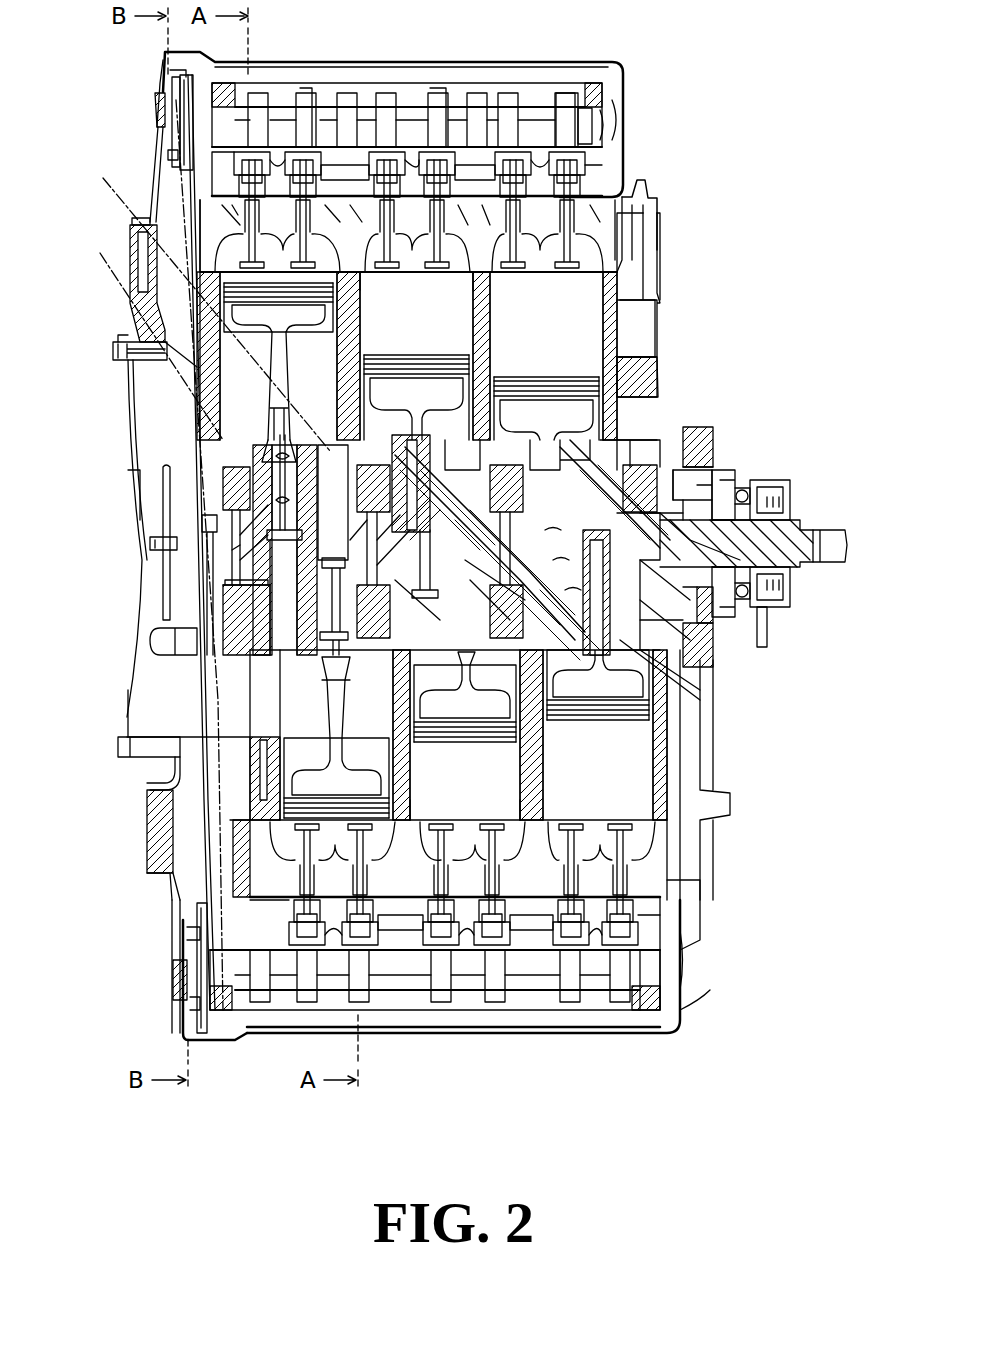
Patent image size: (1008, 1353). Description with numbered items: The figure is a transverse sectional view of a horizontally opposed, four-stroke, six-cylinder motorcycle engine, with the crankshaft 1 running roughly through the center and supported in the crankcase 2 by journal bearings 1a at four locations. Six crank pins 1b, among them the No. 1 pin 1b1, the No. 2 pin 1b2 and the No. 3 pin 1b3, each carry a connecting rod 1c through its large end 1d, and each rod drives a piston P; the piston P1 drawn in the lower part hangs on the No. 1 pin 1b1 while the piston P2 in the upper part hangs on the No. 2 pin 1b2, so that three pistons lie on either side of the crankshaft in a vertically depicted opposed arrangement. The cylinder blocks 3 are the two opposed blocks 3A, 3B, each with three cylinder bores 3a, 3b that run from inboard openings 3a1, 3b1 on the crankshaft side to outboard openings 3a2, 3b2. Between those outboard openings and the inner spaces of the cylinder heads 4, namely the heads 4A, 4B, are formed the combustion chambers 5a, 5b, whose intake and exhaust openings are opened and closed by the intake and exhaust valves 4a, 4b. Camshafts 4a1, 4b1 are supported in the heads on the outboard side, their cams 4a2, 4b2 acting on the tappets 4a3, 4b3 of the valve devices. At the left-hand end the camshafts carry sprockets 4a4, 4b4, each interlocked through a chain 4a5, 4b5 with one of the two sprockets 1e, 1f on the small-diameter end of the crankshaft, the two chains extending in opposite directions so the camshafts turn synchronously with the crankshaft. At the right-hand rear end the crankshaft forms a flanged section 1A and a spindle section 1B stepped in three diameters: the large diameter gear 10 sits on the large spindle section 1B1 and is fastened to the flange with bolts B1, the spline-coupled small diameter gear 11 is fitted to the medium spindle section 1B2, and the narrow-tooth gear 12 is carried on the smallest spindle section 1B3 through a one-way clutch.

The crankshaft 1 is at (660, 380).
The journal bearings 1a is at (690, 440).
The crank pins 1b is at (117, 367).
The No. 1 pin 1b1 is at (770, 620).
The No. 2 pin 1b2 is at (690, 650).
The No. 3 pin 1b3 is at (680, 620).
The connecting rod 1c is at (640, 380).
The large end 1d is at (107, 308).
The sprocket 1e is at (170, 587).
The sprocket 1f is at (125, 470).
The flanged section 1A is at (715, 640).
The spindle section 1B is at (793, 590).
The spindle section 1B1 is at (790, 480).
The spindle section 1B2 is at (800, 510).
The spindle section 1B3 is at (830, 545).
The crankcase 2 is at (660, 430).
The cylinder blocks 3 is at (672, 330).
The cylinder block 3A is at (722, 813).
The cylinder block 3B is at (668, 285).
The cylinder bores 3a is at (527, 773).
The inboard opening 3a1 is at (398, 673).
The outboard opening 3a2 is at (437, 812).
The cylinder bores 3b is at (473, 336).
The inboard opening 3b1 is at (301, 433).
The outboard opening 3b2 is at (365, 282).
The cylinder heads 4 is at (662, 210).
The cylinder head 4A is at (722, 850).
The cylinder head 4B is at (668, 248).
The intake and exhaust valve 4a is at (680, 940).
The camshaft 4a1 is at (540, 970).
The cams 4a2 is at (625, 983).
The tappets 4a3 is at (683, 1000).
The sprocket 4a4 is at (180, 1010).
The chain 4a5 is at (213, 663).
The intake and exhaust valve 4b is at (600, 190).
The camshaft 4b1 is at (500, 120).
The cams 4b2 is at (574, 112).
The tappets 4b3 is at (603, 130).
The sprocket 4b4 is at (178, 105).
The chain 4b5 is at (150, 463).
The combustion chamber 5a is at (690, 905).
The combustion chamber 5b is at (640, 195).
The large diameter gear 10 is at (700, 430).
The small diameter gear 11 is at (752, 468).
The gear 12 is at (748, 490).
The bolts B1 is at (725, 472).
The piston P is at (208, 555).
The piston P1 is at (466, 734).
The piston P2 is at (411, 361).